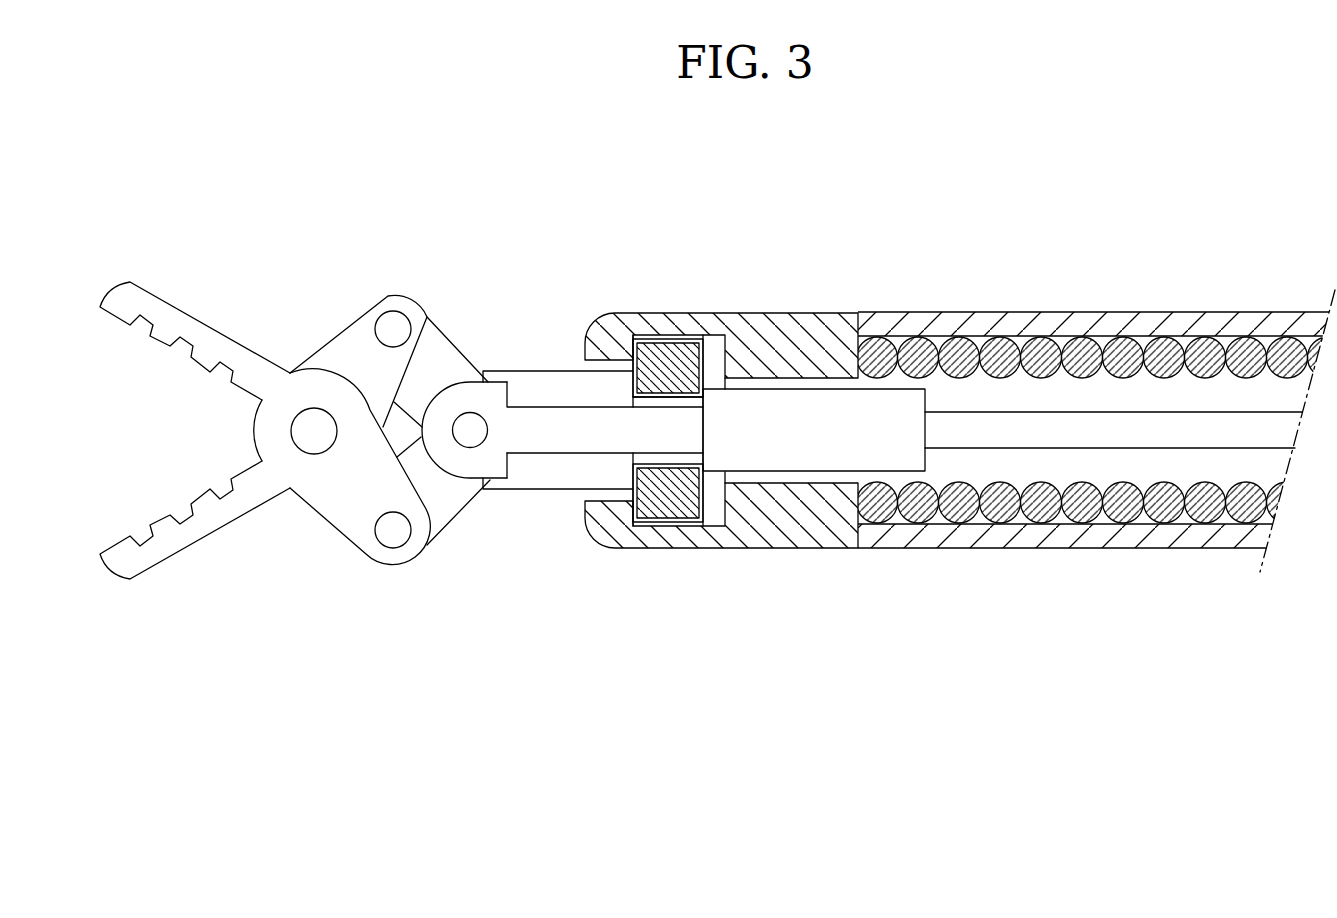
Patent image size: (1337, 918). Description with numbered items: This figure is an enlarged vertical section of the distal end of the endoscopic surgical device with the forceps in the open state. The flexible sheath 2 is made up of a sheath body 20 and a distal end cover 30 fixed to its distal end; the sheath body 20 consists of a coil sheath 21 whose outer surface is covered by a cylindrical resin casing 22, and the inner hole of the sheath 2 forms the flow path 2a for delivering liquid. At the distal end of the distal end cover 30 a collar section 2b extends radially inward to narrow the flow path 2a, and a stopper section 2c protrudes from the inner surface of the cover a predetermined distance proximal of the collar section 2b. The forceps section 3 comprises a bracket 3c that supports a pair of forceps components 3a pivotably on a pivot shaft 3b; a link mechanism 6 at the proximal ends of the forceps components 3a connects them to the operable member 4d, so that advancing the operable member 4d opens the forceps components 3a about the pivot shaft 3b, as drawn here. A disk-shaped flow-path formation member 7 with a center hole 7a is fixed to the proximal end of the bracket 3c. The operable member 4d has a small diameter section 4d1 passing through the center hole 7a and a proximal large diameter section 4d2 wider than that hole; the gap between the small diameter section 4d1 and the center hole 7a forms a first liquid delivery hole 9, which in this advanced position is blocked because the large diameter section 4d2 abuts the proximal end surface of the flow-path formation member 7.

The sheath 2 is at (1247, 252).
The flow path 2a is at (1287, 345).
The collar section 2b is at (641, 346).
The stopper section 2c is at (712, 343).
The forceps section 3 is at (364, 262).
The forceps components 3a is at (165, 301).
The pivot shaft 3b is at (309, 408).
The bracket 3c is at (503, 380).
The operable member 4d is at (717, 490).
The small diameter section 4d1 is at (540, 406).
The large diameter section 4d2 is at (884, 388).
The link mechanism 6 is at (420, 586).
The flow-path formation member 7 is at (673, 505).
The center hole 7a is at (703, 396).
The first liquid delivery hole 9 is at (619, 462).
The sheath body 20 is at (1171, 309).
The coil sheath 21 is at (1044, 356).
The resin casing 22 is at (1108, 311).
The distal end cover 30 is at (832, 549).